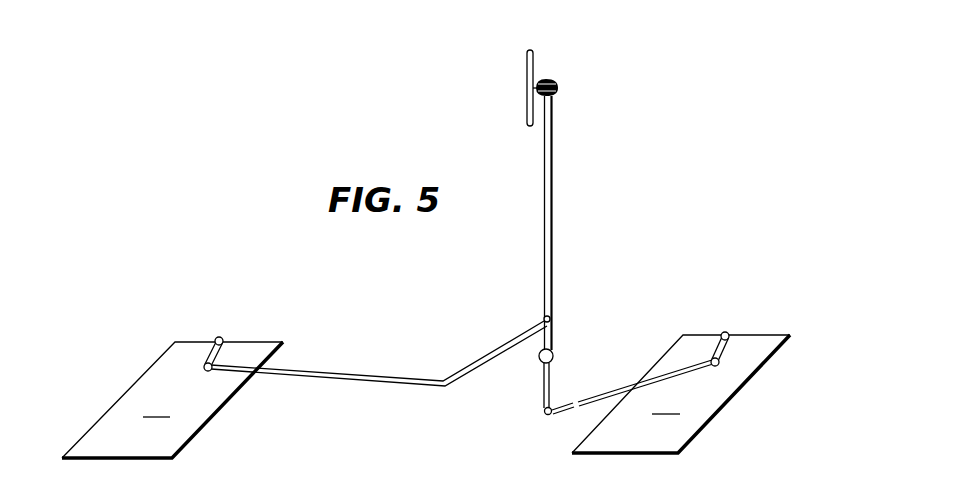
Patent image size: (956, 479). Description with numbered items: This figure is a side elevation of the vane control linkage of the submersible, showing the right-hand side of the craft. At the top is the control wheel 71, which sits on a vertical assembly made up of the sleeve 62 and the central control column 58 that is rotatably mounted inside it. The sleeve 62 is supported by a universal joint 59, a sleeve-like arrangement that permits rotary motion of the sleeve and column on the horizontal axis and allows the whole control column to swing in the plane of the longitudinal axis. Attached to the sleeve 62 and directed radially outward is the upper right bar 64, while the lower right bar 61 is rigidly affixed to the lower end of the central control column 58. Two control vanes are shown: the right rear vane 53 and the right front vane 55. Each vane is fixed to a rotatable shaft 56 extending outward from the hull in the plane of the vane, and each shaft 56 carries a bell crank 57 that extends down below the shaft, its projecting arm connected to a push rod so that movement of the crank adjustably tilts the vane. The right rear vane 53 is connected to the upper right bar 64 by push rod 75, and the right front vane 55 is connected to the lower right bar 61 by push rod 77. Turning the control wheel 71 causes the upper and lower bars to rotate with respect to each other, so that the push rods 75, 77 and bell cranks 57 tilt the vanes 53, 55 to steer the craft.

The right rear vane 53 is at (172, 400).
The right front vane 55 is at (681, 394).
The rotatable shaft 56 is at (219, 337).
The bell crank 57 is at (204, 367).
The central control column 58 is at (544, 384).
The universal joint 59 is at (553, 352).
The lower right bar 61 is at (545, 414).
The sleeve 62 is at (544, 237).
The upper right bar 64 is at (551, 319).
The control wheel 71 is at (527, 69).
The push rod 75 is at (407, 379).
The push rod 77 is at (625, 388).